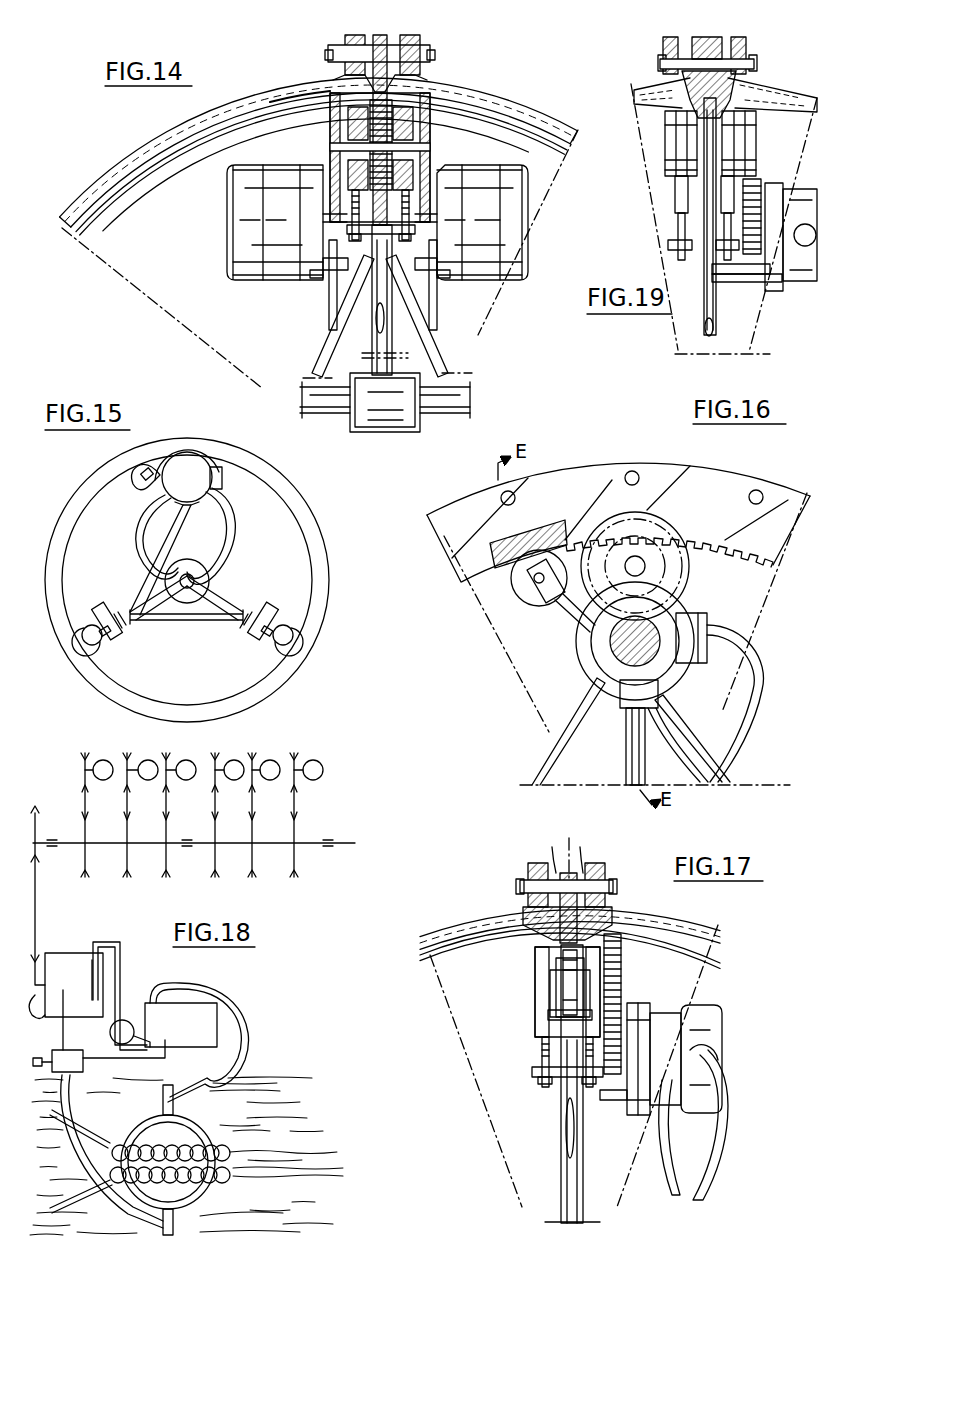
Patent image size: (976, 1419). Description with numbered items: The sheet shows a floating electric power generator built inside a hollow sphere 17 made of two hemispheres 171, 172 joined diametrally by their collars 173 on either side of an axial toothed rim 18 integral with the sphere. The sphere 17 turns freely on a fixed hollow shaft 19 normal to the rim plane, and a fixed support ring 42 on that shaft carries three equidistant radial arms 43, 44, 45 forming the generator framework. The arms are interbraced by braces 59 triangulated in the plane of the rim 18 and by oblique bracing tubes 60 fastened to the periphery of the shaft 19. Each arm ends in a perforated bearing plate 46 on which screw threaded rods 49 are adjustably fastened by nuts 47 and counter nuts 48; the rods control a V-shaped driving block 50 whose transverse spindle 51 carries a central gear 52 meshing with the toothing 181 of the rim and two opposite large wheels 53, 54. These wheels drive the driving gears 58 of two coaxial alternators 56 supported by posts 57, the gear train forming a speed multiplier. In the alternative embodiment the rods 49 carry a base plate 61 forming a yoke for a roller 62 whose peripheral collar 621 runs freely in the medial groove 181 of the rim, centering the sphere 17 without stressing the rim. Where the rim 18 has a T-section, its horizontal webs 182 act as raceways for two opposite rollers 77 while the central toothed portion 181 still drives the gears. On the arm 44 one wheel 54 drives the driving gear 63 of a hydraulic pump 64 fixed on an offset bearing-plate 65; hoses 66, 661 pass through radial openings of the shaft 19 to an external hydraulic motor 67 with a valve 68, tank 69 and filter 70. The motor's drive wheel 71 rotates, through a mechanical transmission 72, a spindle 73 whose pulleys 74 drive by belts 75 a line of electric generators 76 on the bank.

In FIG. 14, the hollow sphere 17 is at (93, 190).
In FIG. 14, the hemisphere 171 is at (182, 141).
In FIG. 17, the hemisphere 171 is at (448, 930).
In FIG. 18, the hemisphere 171 is at (192, 1135).
In FIG. 14, the hemisphere 172 is at (573, 135).
In FIG. 15, the hemisphere 172 is at (322, 553).
In FIG. 17, the hemisphere 172 is at (662, 933).
In FIG. 18, the hemisphere 172 is at (205, 1193).
In FIG. 17, the collar 173 is at (566, 862).
In FIG. 14, the toothed rim 18 is at (420, 84).
In FIG. 16, the toothed rim 18 is at (712, 480).
In FIG. 14, the toothing 181 is at (338, 86).
In FIG. 19, the toothing 181 is at (748, 88).
In FIG. 16, the toothing 181 is at (463, 568).
In FIG. 17, the toothing 181 is at (536, 916).
In FIG. 19, the horizontal webs 182 is at (665, 88).
In FIG. 14, the fixed shaft 19 is at (315, 404).
In FIG. 15, the fixed shaft 19 is at (190, 600).
In FIG. 14, the fixed support ring 42 is at (367, 432).
In FIG. 15, the fixed support ring 42 is at (206, 574).
In FIG. 15, the radial arm 43 is at (164, 622).
In FIG. 14, the radial arm 44 is at (382, 205).
In FIG. 19, the radial arm 44 is at (724, 219).
In FIG. 15, the radial arm 44 is at (200, 540).
In FIG. 16, the radial arm 44 is at (626, 726).
In FIG. 17, the radial arm 44 is at (565, 1178).
In FIG. 15, the radial arm 45 is at (222, 622).
In FIG. 14, the perforated bearing plate 46 is at (345, 272).
In FIG. 15, the perforated bearing plate 46 is at (268, 618).
In FIG. 14, the nuts 47 is at (346, 231).
In FIG. 17, the nuts 47 is at (535, 1070).
In FIG. 14, the counter nuts 48 is at (345, 262).
In FIG. 17, the counter nuts 48 is at (540, 1083).
In FIG. 14, the screw threaded rods 49 is at (335, 170).
In FIG. 15, the screw threaded rods 49 is at (262, 632).
In FIG. 17, the screw threaded rods 49 is at (545, 1046).
In FIG. 14, the driving block 50 is at (342, 128).
In FIG. 17, the driving block 50 is at (537, 1004).
In FIG. 14, the transverse spindle 51 is at (430, 149).
In FIG. 16, the transverse spindle 51 is at (648, 568).
In FIG. 14, the central gear 52 is at (418, 118).
In FIG. 14, the wheel of large diameter 53 is at (302, 90).
In FIG. 14, the wheel of large diameter 54 is at (416, 128).
In FIG. 16, the wheel of large diameter 54 is at (650, 522).
In FIG. 17, the wheel of large diameter 54 is at (622, 960).
In FIG. 14, the alternators 56 is at (277, 166).
In FIG. 14, the posts 57 is at (331, 300).
In FIG. 14, the driving gears 58 is at (334, 214).
In FIG. 14, the braces 59 is at (386, 318).
In FIG. 15, the braces 59 is at (152, 582).
In FIG. 16, the braces 59 is at (580, 690).
In FIG. 14, the bracing tubes 60 is at (330, 356).
In FIG. 15, the base plate 61 is at (114, 614).
In FIG. 16, the base plate 61 is at (559, 611).
In FIG. 17, the base plate 61 is at (553, 1013).
In FIG. 15, the roller 62 is at (96, 620).
In FIG. 16, the roller 62 is at (515, 593).
In FIG. 17, the roller 62 is at (553, 977).
In FIG. 16, the axial peripheral collar 621 is at (566, 533).
In FIG. 17, the axial peripheral collar 621 is at (586, 936).
In FIG. 17, the driving gear 63 is at (640, 1030).
In FIG. 15, the hydraulic pump 64 is at (178, 490).
In FIG. 16, the hydraulic pump 64 is at (652, 640).
In FIG. 17, the hydraulic pump 64 is at (710, 1040).
In FIG. 17, the offset bearing-plate 65 is at (642, 1113).
In FIG. 15, the hose 66 is at (186, 536).
In FIG. 16, the hose 66 is at (760, 716).
In FIG. 17, the hose 66 is at (668, 1166).
In FIG. 18, the hose 66 is at (241, 1052).
In FIG. 16, the hose 661 is at (690, 785).
In FIG. 17, the hose 661 is at (690, 1158).
In FIG. 18, the hose 661 is at (115, 1213).
In FIG. 18, the hydraulic motor 67 is at (70, 965).
In FIG. 18, the valve 68 is at (75, 1075).
In FIG. 18, the tank 69 is at (218, 1020).
In FIG. 18, the filter 70 is at (160, 1062).
In FIG. 18, the drive wheel 71 is at (55, 1028).
In FIG. 18, the mechanical transmission 72 is at (36, 912).
In FIG. 18, the rotating spindle 73 is at (115, 845).
In FIG. 18, the pulleys 74 is at (293, 830).
In FIG. 18, the belts 75 is at (85, 792).
In FIG. 18, the electric generators 76 is at (100, 762).
In FIG. 19, the rollers 77 is at (677, 147).